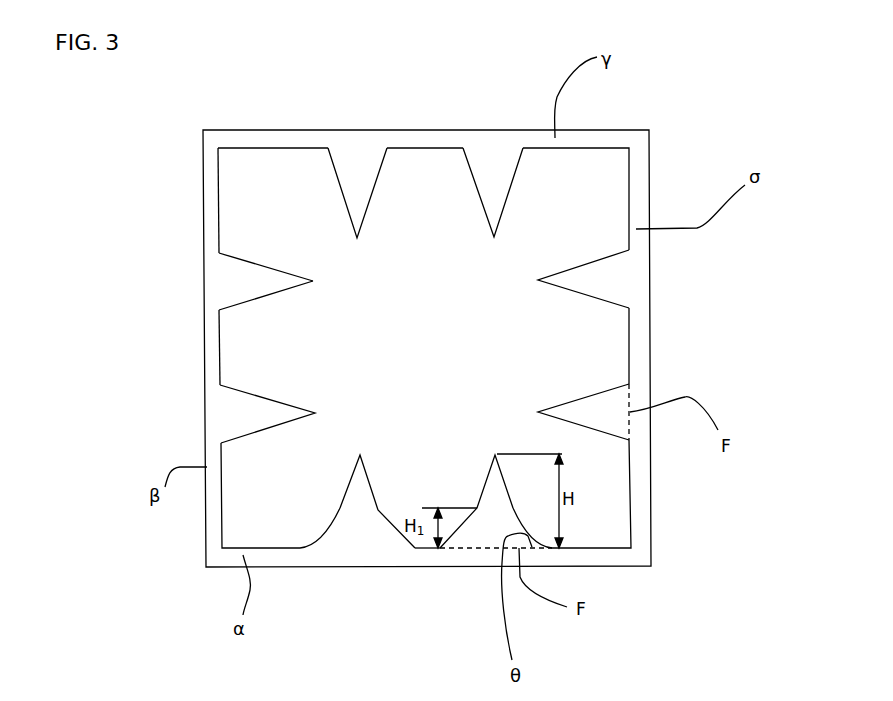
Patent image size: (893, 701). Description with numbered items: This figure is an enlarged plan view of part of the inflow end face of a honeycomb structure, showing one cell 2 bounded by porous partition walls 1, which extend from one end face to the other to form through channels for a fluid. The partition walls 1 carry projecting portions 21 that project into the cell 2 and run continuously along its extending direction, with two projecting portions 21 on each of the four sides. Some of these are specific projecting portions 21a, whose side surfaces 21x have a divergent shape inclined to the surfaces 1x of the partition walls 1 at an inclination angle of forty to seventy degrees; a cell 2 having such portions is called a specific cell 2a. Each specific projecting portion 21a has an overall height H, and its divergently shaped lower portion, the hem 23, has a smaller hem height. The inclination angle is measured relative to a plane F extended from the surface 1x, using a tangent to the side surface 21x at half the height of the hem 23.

The partition wall 1 is at (282, 137).
The cell 2 is at (347, 348).
The specific cell 2a is at (316, 358).
The projecting portion 21 is at (362, 183).
The side surface 21x is at (280, 267).
The specific projecting portion 21a is at (412, 564).
The hem 23 is at (332, 537).
The surface of the partition wall 1x is at (627, 455).